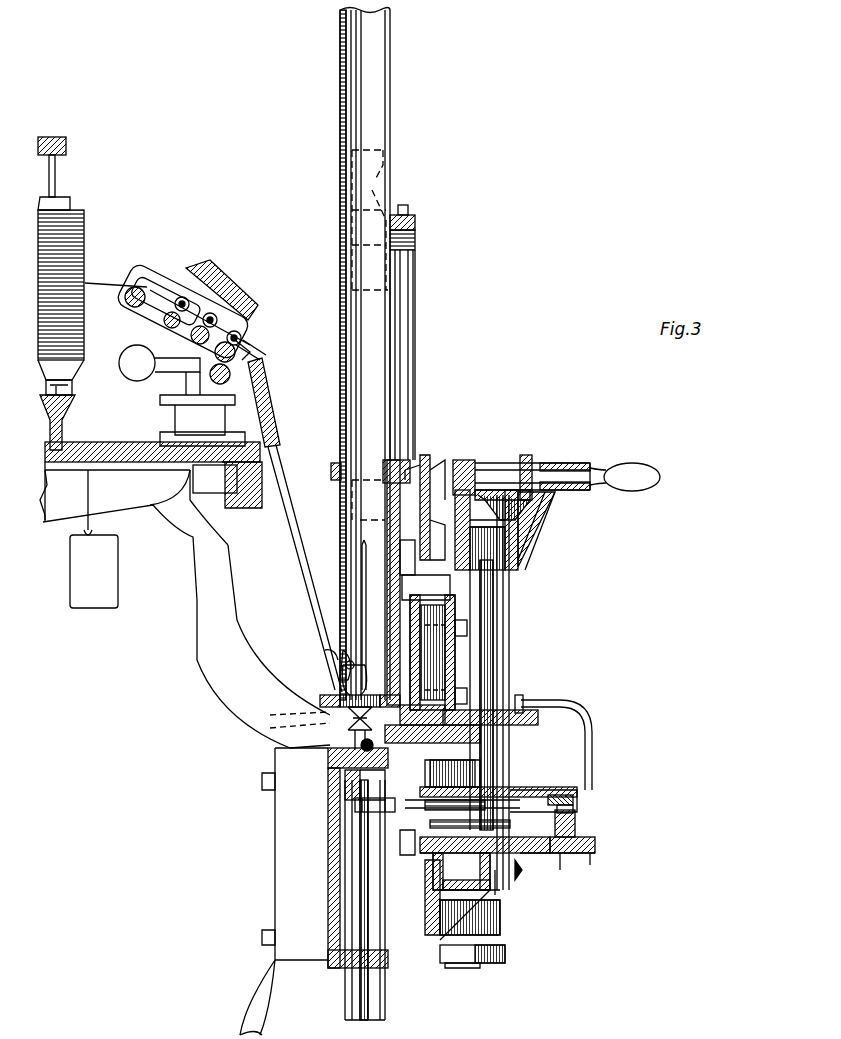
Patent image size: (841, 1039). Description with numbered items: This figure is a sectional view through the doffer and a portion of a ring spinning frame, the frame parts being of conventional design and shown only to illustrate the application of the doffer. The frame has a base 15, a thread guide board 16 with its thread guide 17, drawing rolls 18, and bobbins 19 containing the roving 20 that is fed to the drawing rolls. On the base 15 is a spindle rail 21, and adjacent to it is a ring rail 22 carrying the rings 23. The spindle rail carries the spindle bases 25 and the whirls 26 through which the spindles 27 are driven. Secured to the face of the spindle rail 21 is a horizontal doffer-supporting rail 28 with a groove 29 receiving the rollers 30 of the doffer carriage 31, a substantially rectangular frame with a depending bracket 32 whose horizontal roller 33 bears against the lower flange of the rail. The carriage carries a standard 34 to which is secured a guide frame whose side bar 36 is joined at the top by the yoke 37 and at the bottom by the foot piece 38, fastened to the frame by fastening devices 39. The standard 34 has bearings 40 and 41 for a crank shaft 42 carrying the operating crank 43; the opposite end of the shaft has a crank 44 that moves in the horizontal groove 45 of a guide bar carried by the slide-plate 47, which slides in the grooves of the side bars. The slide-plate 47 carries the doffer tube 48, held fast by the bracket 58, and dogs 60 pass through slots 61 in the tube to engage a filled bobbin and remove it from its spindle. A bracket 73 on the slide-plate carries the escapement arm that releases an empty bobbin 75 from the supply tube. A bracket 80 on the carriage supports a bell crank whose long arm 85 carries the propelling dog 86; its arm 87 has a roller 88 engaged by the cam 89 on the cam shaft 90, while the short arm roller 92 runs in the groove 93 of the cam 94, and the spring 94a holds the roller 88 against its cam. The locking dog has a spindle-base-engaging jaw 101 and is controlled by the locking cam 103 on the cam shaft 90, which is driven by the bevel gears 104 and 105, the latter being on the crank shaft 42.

The base of ring frame 15 is at (240, 630).
The thread guide board 16 is at (278, 420).
The thread guide 17 is at (248, 352).
The drawing rolls 18 is at (242, 305).
The bobbins containing the roving 19 is at (86, 252).
The roving 20 is at (108, 283).
The spindle rail 21 is at (340, 762).
The ring rail 22 is at (335, 697).
The rings 23 is at (340, 680).
The spindle bases 25 is at (358, 792).
The whirls 26 is at (355, 728).
The spindles 27 is at (360, 560).
The doffer-supporting rail 28 is at (376, 737).
The groove 29 is at (345, 830).
The rollers 30 is at (410, 728).
The doffer carriage 31 is at (495, 710).
The depending bracket 32 is at (425, 905).
The horizontal roller 33 is at (492, 922).
The standard 34 is at (520, 525).
The side bar 36 is at (413, 320).
The yoke 37 is at (410, 215).
The foot piece 38 is at (425, 650).
The fastening devices 39 is at (465, 630).
The bearing 40 is at (478, 465).
The bearing 41 is at (566, 473).
The crank shaft 42 is at (593, 470).
The operating crank 43 is at (612, 475).
The crank 44 is at (452, 462).
The horizontal groove 45 is at (403, 565).
The slide-plate 47 is at (398, 513).
The doffer tube 48 is at (392, 142).
The bracket 58 is at (332, 468).
The dogs 60 is at (340, 660).
The slots 61 is at (335, 652).
The bracket 73 is at (432, 470).
The bobbin 75 is at (380, 385).
The bracket 80 is at (560, 715).
The long arm 85 is at (507, 853).
The propelling dog 86 is at (410, 840).
The arm 87 is at (480, 775).
The roller 88 is at (485, 790).
The cam 89 is at (575, 802).
The cam shaft 90 is at (510, 880).
The roller 92 is at (575, 832).
The groove 93 is at (571, 868).
The cam 94 is at (599, 866).
The spring 94a is at (522, 878).
The spindle-base-engaging jaw 101 is at (358, 802).
The locking cam 103 is at (560, 782).
The bevel gear 104 is at (502, 507).
The bevel gear 105 is at (552, 455).